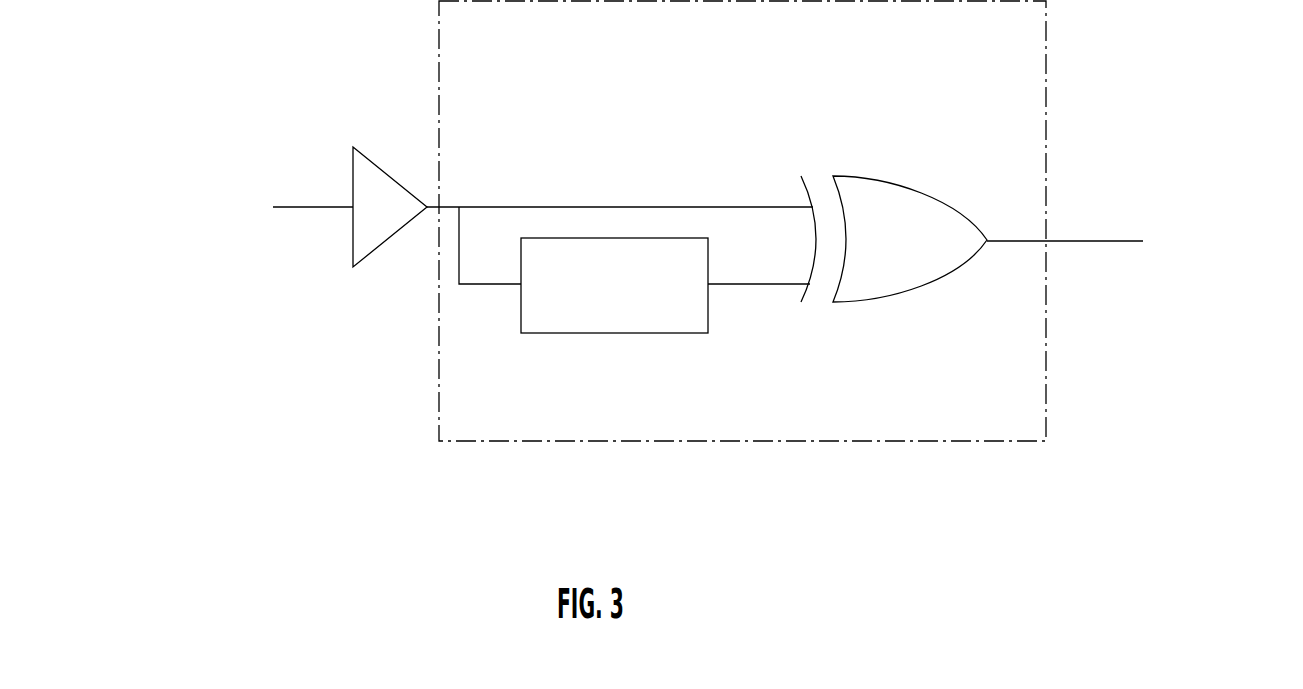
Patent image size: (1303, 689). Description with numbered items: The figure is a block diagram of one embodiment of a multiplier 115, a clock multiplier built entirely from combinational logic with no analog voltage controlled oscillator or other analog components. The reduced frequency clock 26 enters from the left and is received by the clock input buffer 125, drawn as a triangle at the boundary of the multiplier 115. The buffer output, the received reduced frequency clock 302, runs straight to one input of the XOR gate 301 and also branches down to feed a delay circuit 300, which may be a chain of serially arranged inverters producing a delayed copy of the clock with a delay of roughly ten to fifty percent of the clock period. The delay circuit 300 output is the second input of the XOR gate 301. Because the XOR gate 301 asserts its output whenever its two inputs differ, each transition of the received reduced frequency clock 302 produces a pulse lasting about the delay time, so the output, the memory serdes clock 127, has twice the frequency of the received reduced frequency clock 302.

The reduced frequency clock 26 is at (213, 188).
The clock input buffer 125 is at (393, 216).
The received reduced frequency clock 302 is at (620, 178).
The delay circuit 300 is at (632, 310).
The XOR gate 301 is at (927, 262).
The memory serdes clock 127 is at (1125, 225).
The multiplier 115 is at (630, 441).